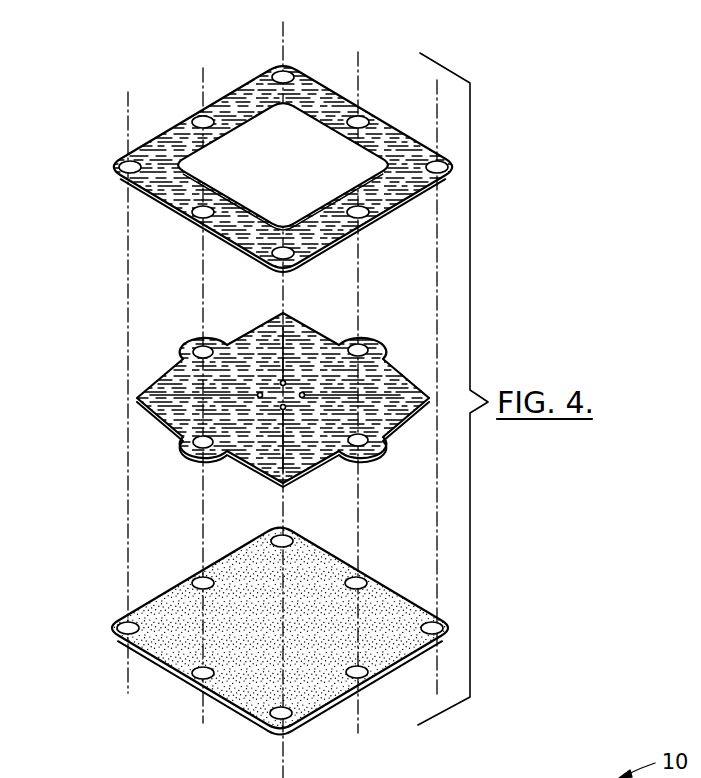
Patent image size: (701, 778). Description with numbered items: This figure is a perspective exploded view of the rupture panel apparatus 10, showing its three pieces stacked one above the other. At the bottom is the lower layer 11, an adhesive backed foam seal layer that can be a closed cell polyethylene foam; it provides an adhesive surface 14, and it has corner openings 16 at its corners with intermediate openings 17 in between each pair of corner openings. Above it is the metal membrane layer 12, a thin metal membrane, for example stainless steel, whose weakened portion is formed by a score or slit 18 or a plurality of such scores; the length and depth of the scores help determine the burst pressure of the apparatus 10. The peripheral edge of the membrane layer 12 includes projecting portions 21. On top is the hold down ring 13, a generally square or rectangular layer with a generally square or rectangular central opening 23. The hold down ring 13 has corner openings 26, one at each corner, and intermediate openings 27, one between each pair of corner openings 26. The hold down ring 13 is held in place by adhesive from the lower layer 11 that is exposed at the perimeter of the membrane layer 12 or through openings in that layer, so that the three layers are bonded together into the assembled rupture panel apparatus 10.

The rupture panel apparatus 10 is at (494, 304).
The lower layer 11 is at (280, 631).
The metal membrane layer 12 is at (162, 423).
The hold down ring 13 is at (158, 210).
The adhesive surface 14 is at (383, 607).
The corner openings 16 is at (290, 542).
The intermediate openings 17 is at (197, 580).
The score or slit 18 is at (286, 352).
The projecting portions 21 is at (193, 345).
The central opening 23 is at (253, 134).
The corner openings 26 is at (127, 165).
The intermediate openings 27 is at (203, 119).